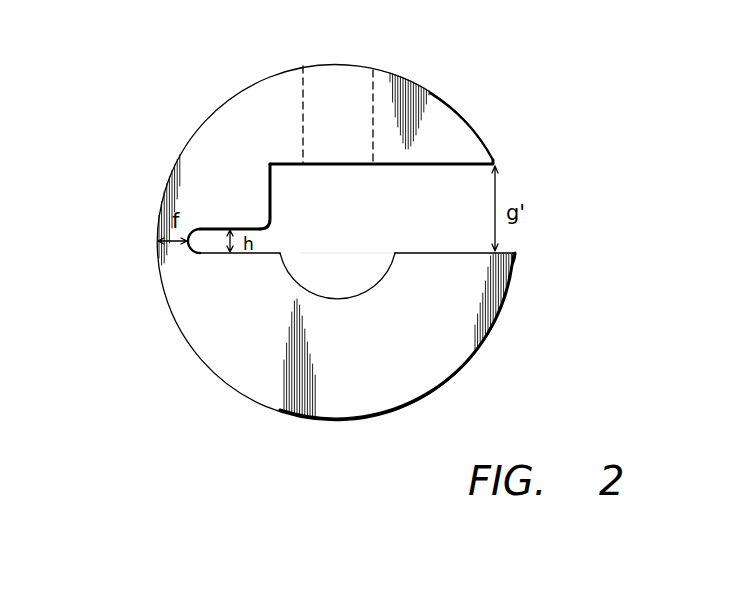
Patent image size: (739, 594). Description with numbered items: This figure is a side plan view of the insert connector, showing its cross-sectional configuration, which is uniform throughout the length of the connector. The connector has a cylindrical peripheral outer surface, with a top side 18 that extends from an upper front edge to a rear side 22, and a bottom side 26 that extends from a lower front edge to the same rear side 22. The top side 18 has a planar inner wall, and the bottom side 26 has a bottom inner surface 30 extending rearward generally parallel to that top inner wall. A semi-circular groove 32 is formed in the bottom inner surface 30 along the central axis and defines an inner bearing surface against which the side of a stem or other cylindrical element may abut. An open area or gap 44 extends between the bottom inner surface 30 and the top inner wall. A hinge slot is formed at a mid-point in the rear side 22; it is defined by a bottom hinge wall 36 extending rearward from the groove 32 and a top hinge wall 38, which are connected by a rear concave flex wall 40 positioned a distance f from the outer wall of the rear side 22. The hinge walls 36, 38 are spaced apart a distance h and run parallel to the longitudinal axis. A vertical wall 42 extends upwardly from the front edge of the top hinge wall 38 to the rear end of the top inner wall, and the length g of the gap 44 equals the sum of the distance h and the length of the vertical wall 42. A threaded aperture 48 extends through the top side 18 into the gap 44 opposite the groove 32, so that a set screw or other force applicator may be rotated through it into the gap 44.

The top side 18 is at (472, 113).
The rear side 22 is at (157, 260).
The bottom side 26 is at (496, 330).
The bottom inner surface 30 is at (440, 252).
The semi-circular groove 32 is at (340, 300).
The bottom hinge wall 36 is at (250, 255).
The top hinge wall 38 is at (213, 229).
The rear concave flex wall 40 is at (183, 247).
The vertical wall 42 is at (270, 187).
The gap 44 is at (357, 252).
The threaded aperture 48 is at (323, 95).